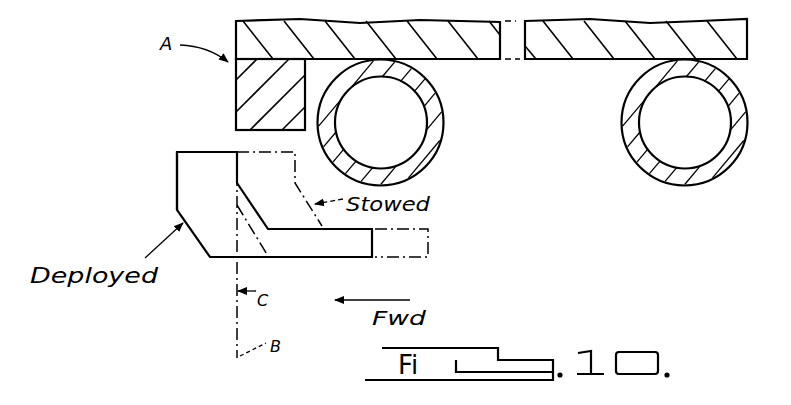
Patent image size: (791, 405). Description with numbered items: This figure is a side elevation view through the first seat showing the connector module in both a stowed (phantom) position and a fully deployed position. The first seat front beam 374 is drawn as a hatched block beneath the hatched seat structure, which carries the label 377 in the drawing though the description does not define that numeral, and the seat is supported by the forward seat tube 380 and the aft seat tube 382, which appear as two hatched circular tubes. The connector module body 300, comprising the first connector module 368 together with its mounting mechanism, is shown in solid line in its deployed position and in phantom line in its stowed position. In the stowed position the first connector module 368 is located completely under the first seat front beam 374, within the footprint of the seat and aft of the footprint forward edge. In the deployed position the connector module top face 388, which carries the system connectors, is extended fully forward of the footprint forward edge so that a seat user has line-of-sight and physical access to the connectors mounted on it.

The connector module body 300 is at (290, 260).
The first connector module 368 is at (196, 200).
The first seat front beam 374 is at (236, 91).
The support plate 377 is at (566, 52).
The forward seat tube 380 is at (440, 128).
The aft seat tube 382 is at (636, 143).
The connector module top face 388 is at (185, 152).